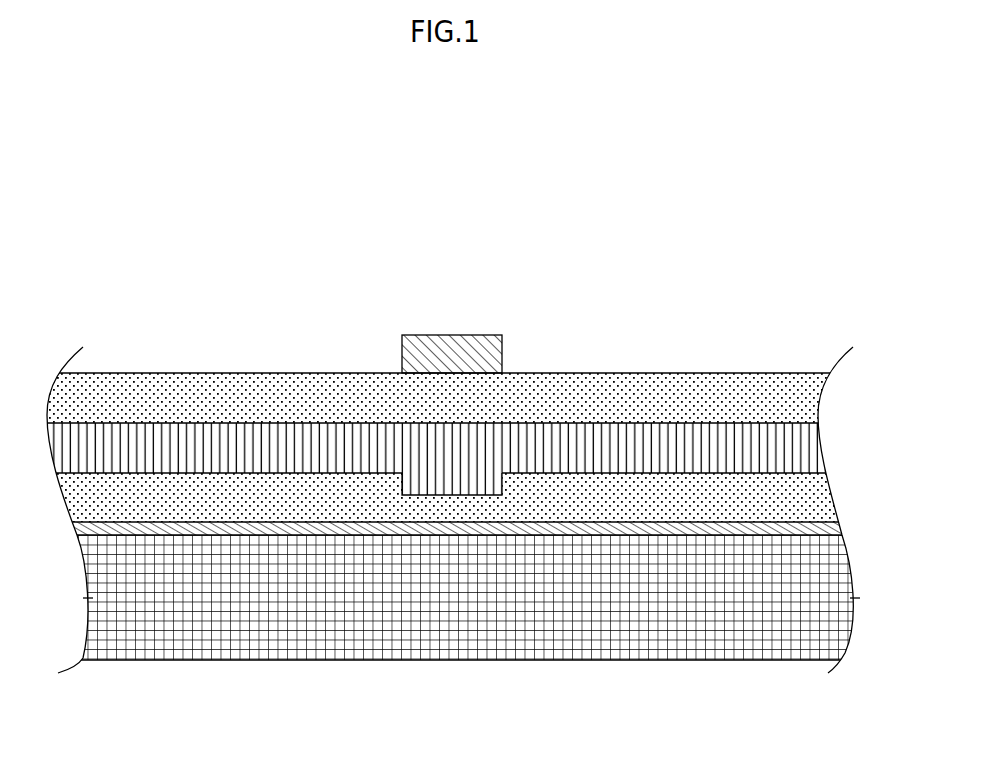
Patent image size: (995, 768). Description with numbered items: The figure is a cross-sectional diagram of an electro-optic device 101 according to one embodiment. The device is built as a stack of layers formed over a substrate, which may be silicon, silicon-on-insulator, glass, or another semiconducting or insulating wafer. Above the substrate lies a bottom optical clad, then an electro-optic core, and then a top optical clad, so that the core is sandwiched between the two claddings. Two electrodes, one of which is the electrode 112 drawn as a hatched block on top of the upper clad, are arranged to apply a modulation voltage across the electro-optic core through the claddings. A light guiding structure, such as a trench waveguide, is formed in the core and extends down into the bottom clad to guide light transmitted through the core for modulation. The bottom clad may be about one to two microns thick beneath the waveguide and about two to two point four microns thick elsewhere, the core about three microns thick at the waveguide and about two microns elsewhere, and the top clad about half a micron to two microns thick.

The electro-optic device 101 is at (572, 168).
The electrode 112 is at (452, 335).